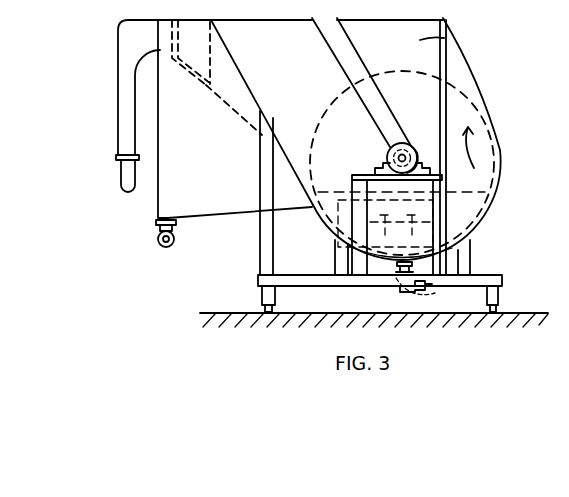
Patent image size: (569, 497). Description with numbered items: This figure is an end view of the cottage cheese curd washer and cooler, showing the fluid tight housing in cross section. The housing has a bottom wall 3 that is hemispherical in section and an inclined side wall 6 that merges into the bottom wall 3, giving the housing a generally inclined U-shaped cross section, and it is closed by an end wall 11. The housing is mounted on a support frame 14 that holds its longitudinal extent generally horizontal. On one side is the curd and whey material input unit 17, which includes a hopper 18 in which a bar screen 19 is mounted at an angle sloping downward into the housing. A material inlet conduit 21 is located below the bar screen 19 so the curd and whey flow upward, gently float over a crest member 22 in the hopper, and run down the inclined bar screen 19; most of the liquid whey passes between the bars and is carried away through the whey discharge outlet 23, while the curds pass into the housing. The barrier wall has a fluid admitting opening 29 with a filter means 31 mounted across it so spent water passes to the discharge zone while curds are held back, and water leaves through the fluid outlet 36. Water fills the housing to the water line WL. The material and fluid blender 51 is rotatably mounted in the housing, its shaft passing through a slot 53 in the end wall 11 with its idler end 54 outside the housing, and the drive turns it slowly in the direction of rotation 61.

The bottom wall 3 is at (472, 231).
The side wall 6 is at (465, 58).
The end wall 11 is at (444, 34).
The support frame 14 is at (258, 280).
The material input unit 17 is at (118, 80).
The hopper 18 is at (165, 201).
The bar screen 19 is at (224, 113).
The material inlet conduit 21 is at (121, 174).
The crest member 22 is at (158, 64).
The whey discharge outlet 23 is at (160, 247).
The fluid admitting opening 29 is at (482, 208).
The filter means 31 is at (394, 272).
The fluid outlet 36 is at (433, 284).
The material and fluid blender 51 is at (472, 106).
The slot 53 is at (334, 50).
The idler end 54 is at (389, 158).
The direction of rotation 61 is at (473, 147).
The water line WL is at (484, 187).